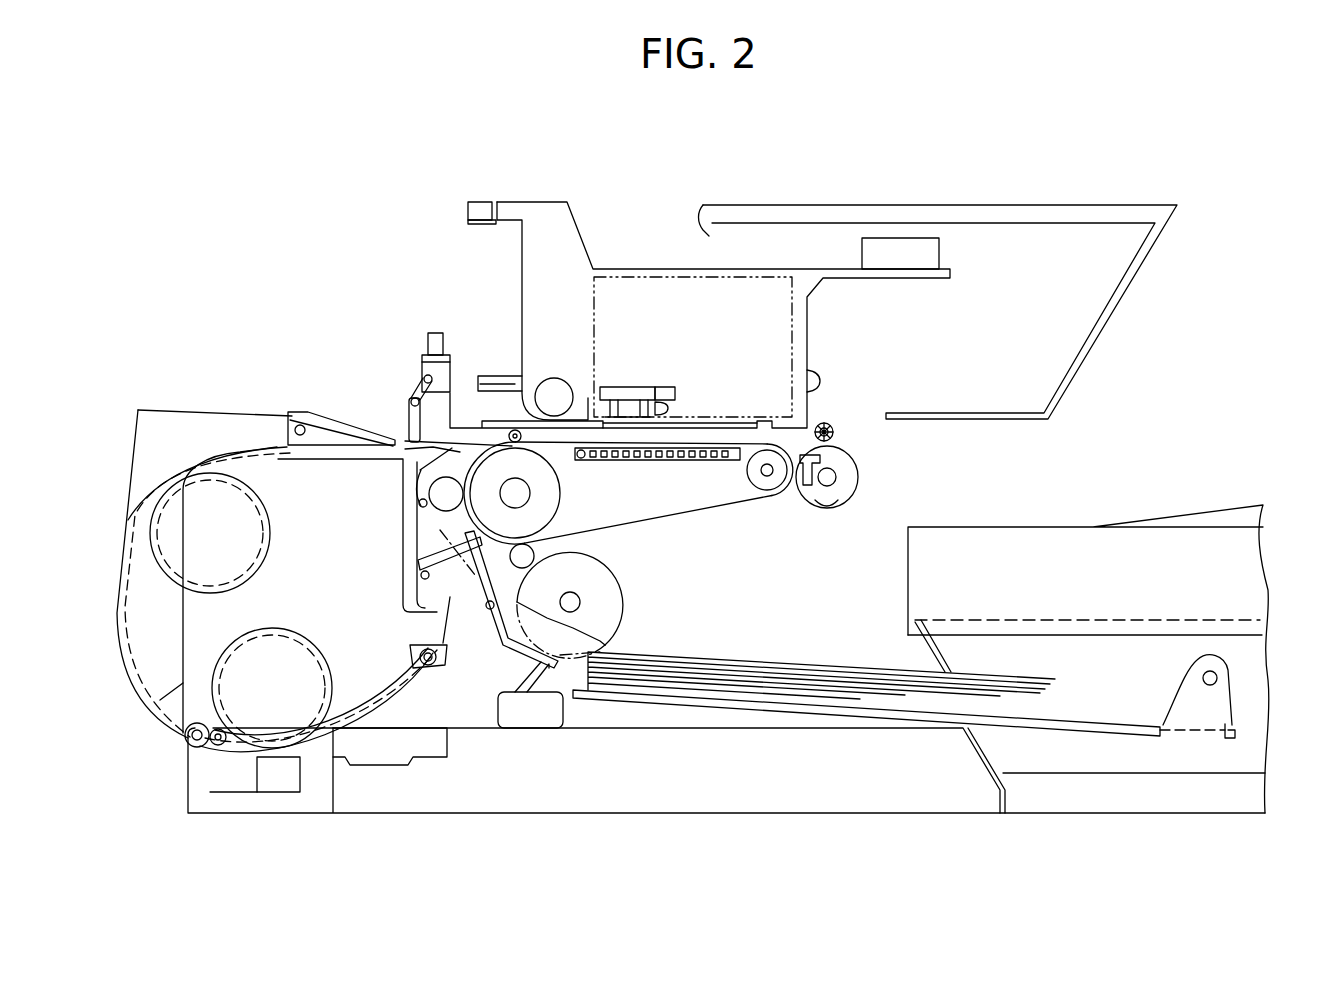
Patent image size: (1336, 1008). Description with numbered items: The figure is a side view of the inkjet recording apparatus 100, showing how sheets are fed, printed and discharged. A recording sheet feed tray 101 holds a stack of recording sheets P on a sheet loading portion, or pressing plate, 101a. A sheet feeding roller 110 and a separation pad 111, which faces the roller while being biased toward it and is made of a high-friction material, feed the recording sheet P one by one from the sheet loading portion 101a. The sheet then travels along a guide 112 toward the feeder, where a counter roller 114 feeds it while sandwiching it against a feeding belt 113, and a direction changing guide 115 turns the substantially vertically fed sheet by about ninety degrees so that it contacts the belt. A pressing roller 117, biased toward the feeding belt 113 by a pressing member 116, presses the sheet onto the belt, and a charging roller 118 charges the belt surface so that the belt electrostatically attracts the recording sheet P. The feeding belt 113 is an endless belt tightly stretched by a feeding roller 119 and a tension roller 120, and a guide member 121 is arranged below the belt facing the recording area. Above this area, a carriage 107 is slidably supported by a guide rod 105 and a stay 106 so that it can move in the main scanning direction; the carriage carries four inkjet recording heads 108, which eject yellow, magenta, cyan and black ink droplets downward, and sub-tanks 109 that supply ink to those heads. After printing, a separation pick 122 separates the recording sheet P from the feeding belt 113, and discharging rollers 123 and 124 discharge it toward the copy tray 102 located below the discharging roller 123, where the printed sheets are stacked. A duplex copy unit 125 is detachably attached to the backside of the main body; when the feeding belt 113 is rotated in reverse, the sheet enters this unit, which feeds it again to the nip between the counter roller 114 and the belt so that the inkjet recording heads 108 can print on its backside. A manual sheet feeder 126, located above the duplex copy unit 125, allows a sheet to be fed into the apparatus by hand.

The inkjet recording apparatus 100 is at (932, 160).
The recording sheet feed tray 101 is at (1088, 797).
The sheet loading portion (pressing plate) 101a is at (673, 700).
The copy tray 102 is at (1175, 508).
The guide rod 105 is at (553, 380).
The stay 106 is at (476, 200).
The carriage 107 is at (573, 238).
The inkjet recording heads 108 is at (710, 424).
The sub-tanks 109 is at (748, 297).
The sheet feeding roller 110 is at (624, 605).
The separation pad 111 is at (538, 682).
The guide 112 is at (478, 593).
The feeding belt 113 is at (703, 510).
The counter roller 114 is at (430, 494).
The direction changing guide 115 is at (417, 437).
The pressing member 116 is at (424, 378).
The pressing roller 117 is at (512, 428).
The charging roller 118 is at (534, 560).
The feeding roller 119 is at (561, 493).
The tension roller 120 is at (770, 490).
The guide member 121 is at (640, 462).
The separation pick 122 is at (833, 508).
The discharging roller 123 is at (858, 477).
The discharging roller 124 is at (834, 433).
The duplex copy unit 125 is at (150, 456).
The manual sheet feeder 126 is at (291, 404).
The recording sheet P is at (766, 695).